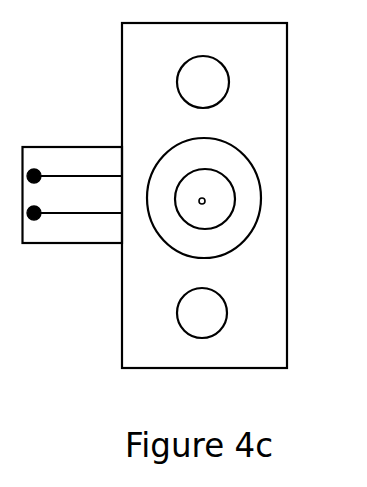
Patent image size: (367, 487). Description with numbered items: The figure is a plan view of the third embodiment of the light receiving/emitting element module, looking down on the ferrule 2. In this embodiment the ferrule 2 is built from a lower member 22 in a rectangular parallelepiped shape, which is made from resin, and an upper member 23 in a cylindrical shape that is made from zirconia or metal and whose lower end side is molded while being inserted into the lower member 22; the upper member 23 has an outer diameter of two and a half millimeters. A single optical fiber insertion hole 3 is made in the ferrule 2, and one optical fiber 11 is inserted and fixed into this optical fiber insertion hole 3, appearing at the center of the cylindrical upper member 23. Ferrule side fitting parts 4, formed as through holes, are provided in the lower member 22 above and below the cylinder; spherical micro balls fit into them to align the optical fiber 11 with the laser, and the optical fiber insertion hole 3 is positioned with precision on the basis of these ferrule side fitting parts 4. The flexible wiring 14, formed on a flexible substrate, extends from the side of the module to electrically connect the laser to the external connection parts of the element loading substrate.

The ferrule 2 is at (200, 201).
The optical fiber insertion hole 3 is at (202, 204).
The ferrule side fitting part 4 is at (229, 82).
The optical fiber 11 is at (173, 229).
The flexible wiring 14 is at (84, 176).
The lower member 22 is at (273, 327).
The upper member 23 is at (230, 230).